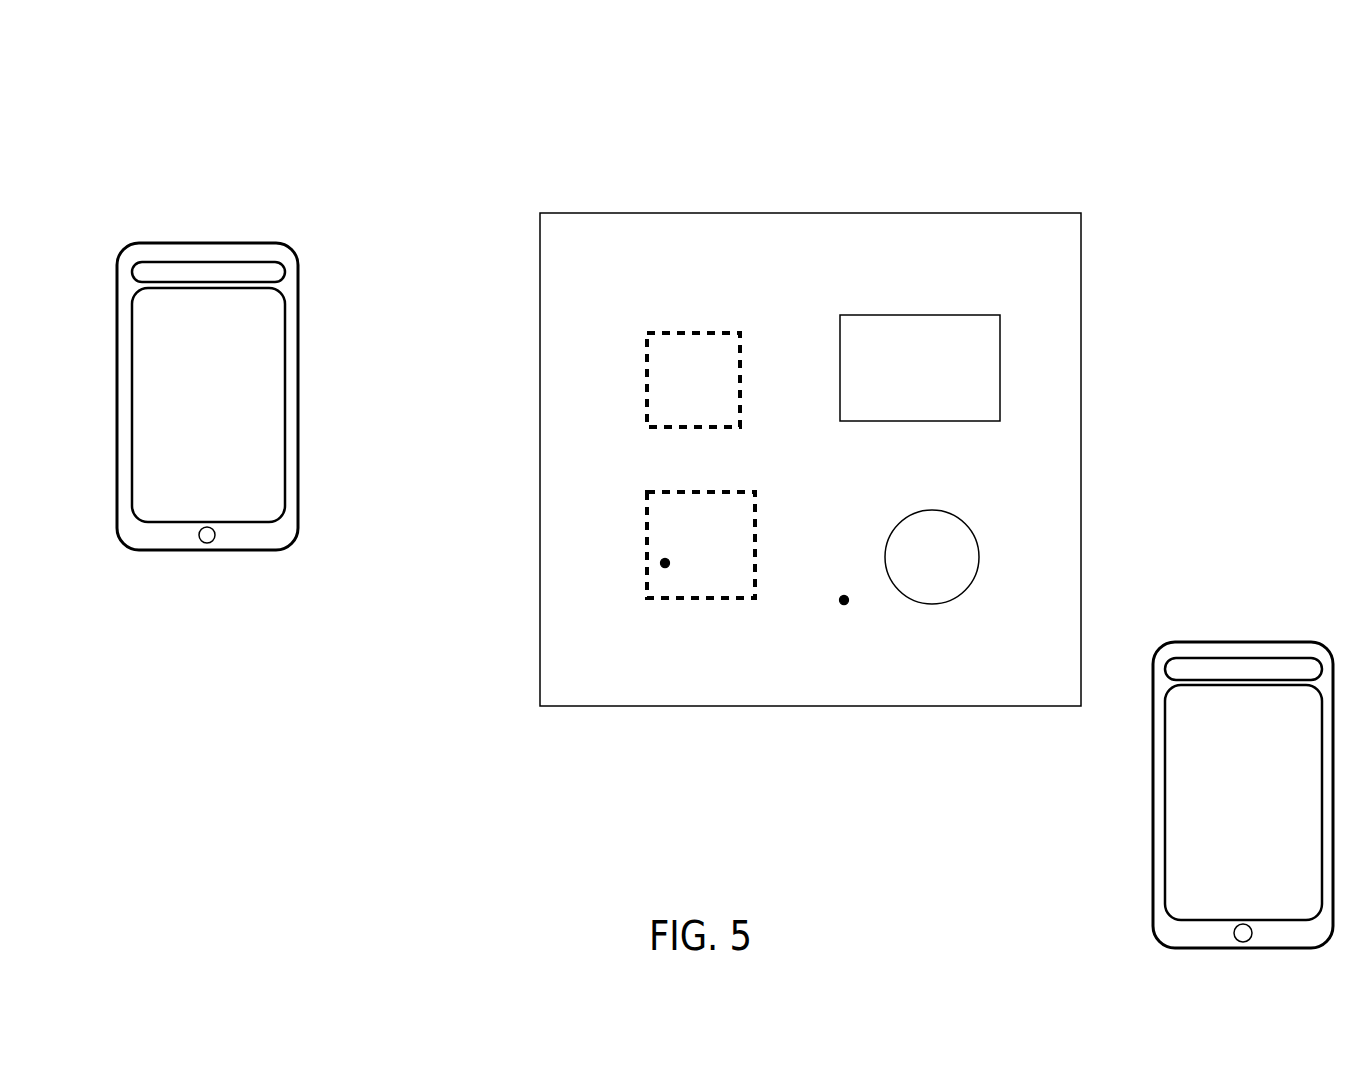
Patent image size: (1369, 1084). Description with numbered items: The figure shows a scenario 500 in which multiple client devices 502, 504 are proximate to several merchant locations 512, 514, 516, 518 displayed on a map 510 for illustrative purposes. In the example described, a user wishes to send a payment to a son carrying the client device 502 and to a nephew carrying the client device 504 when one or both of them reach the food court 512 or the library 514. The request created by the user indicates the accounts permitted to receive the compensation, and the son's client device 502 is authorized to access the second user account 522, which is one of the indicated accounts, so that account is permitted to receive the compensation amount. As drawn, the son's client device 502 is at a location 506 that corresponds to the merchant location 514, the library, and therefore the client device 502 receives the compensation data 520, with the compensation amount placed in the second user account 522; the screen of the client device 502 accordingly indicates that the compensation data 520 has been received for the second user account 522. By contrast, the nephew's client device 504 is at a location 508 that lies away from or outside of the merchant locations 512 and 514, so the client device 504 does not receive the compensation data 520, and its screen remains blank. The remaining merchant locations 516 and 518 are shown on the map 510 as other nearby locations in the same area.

The system / user interface environment 500 is at (139, 64).
The client device 502 is at (207, 381).
The client device 504 is at (1195, 642).
The location 506 is at (665, 563).
The location 508 is at (844, 600).
The map 510 is at (997, 213).
The food court 512 is at (693, 380).
The library 514 is at (701, 545).
The merchant location 516 is at (920, 368).
The merchant location 518 is at (932, 557).
The compensation data 520 is at (207, 345).
The second user account 522 is at (210, 456).